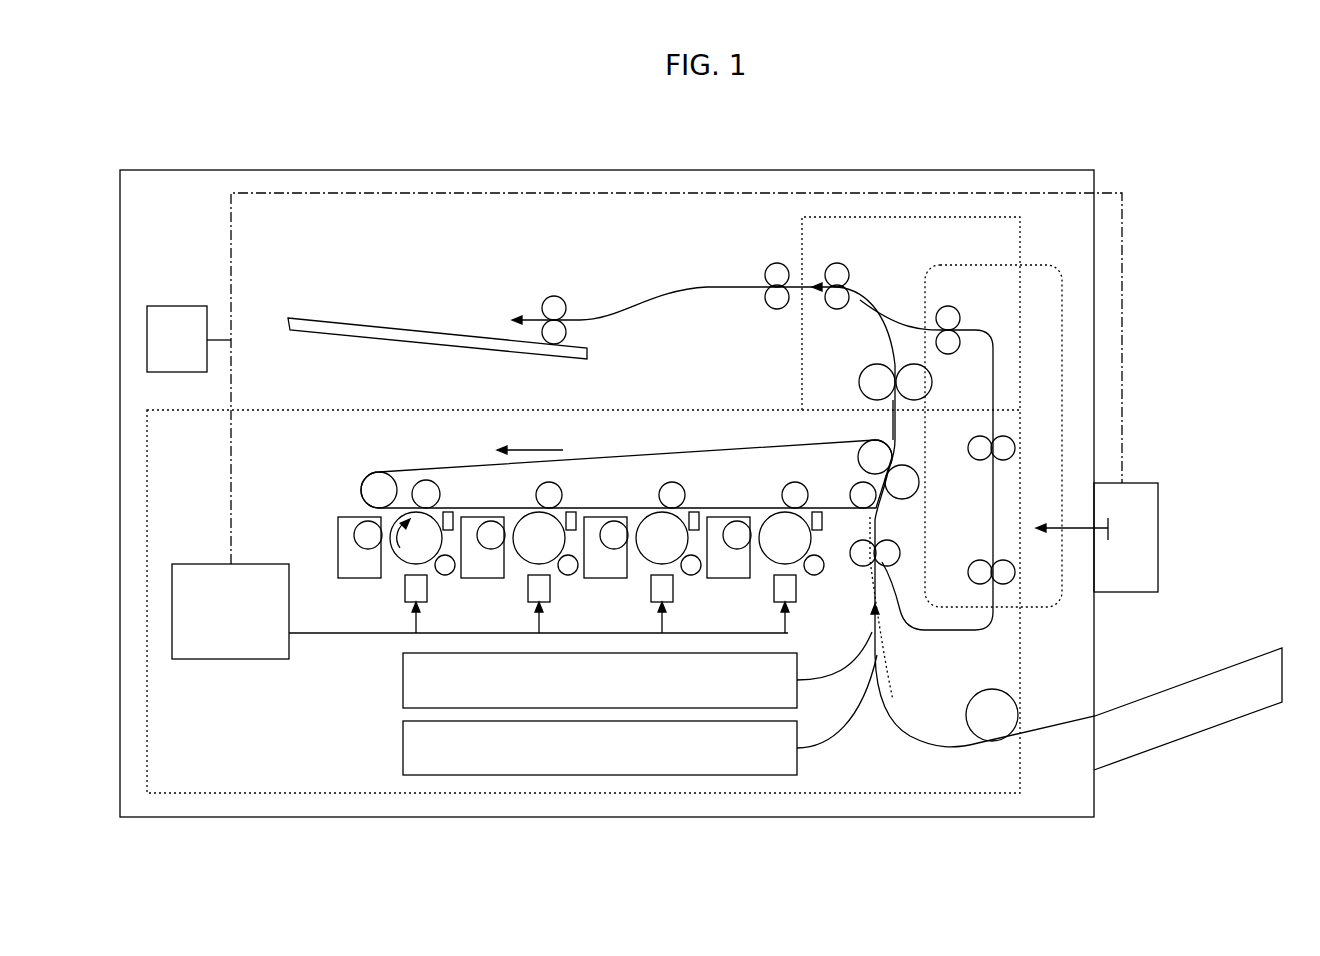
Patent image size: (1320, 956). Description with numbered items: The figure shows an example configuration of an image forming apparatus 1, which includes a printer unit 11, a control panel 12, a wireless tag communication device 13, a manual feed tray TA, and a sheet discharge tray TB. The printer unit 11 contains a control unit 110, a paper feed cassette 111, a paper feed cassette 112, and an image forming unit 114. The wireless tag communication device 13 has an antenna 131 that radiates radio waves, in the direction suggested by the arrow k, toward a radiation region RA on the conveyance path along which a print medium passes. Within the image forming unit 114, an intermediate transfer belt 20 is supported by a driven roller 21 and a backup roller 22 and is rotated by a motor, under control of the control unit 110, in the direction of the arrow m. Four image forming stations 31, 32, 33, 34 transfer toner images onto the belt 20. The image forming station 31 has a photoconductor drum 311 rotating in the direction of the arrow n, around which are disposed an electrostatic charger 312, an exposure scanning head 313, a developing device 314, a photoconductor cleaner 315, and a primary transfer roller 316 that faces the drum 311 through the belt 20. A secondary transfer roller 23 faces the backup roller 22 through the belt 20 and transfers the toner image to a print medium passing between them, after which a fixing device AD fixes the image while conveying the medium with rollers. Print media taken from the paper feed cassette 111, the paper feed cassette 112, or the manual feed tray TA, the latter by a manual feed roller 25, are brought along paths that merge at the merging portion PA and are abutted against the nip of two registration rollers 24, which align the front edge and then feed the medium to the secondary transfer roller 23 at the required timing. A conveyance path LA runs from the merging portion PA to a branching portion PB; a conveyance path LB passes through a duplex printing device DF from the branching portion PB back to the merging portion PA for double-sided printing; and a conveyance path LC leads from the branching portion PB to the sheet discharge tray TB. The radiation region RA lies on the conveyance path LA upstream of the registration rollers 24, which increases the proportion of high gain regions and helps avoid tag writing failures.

The image forming apparatus 1 is at (285, 157).
The printer unit 11 is at (192, 412).
The control panel 12 is at (200, 306).
The wireless tag communication device 13 is at (1145, 483).
The antenna 131 is at (1112, 522).
The control unit 110 is at (205, 564).
The paper feed cassette 111 is at (403, 680).
The paper feed cassette 112 is at (403, 748).
The image forming unit 114 is at (803, 412).
The intermediate transfer belt 20 is at (682, 452).
The driven roller 21 is at (368, 478).
The backup roller 22 is at (858, 452).
The secondary transfer roller 23 is at (896, 500).
The registration rollers 24 is at (857, 565).
The manual feed roller 25 is at (1002, 692).
The image forming station 31 is at (397, 548).
The image forming station 32 is at (555, 582).
The image forming station 33 is at (679, 582).
The image forming station 34 is at (766, 582).
The photoconductor drum 311 is at (392, 525).
The electrostatic charger 312 is at (450, 574).
The exposure scanning head 313 is at (404, 590).
The developing device 314 is at (338, 533).
The photoconductor cleaner 315 is at (448, 512).
The primary transfer roller 316 is at (428, 481).
The sheet discharge tray TB is at (420, 333).
The manual feed tray TA is at (1252, 656).
The conveyance path LC is at (795, 277).
The branching portion PB is at (875, 294).
The conveyance path LB is at (903, 320).
The duplex printing device DF is at (1030, 264).
The fixing device AD is at (885, 357).
The conveyance path LA is at (893, 420).
The radiation region RA is at (908, 492).
The merging portion PA is at (886, 600).
The arrow k is at (1072, 521).
The arrow m is at (535, 450).
The arrow n is at (400, 570).